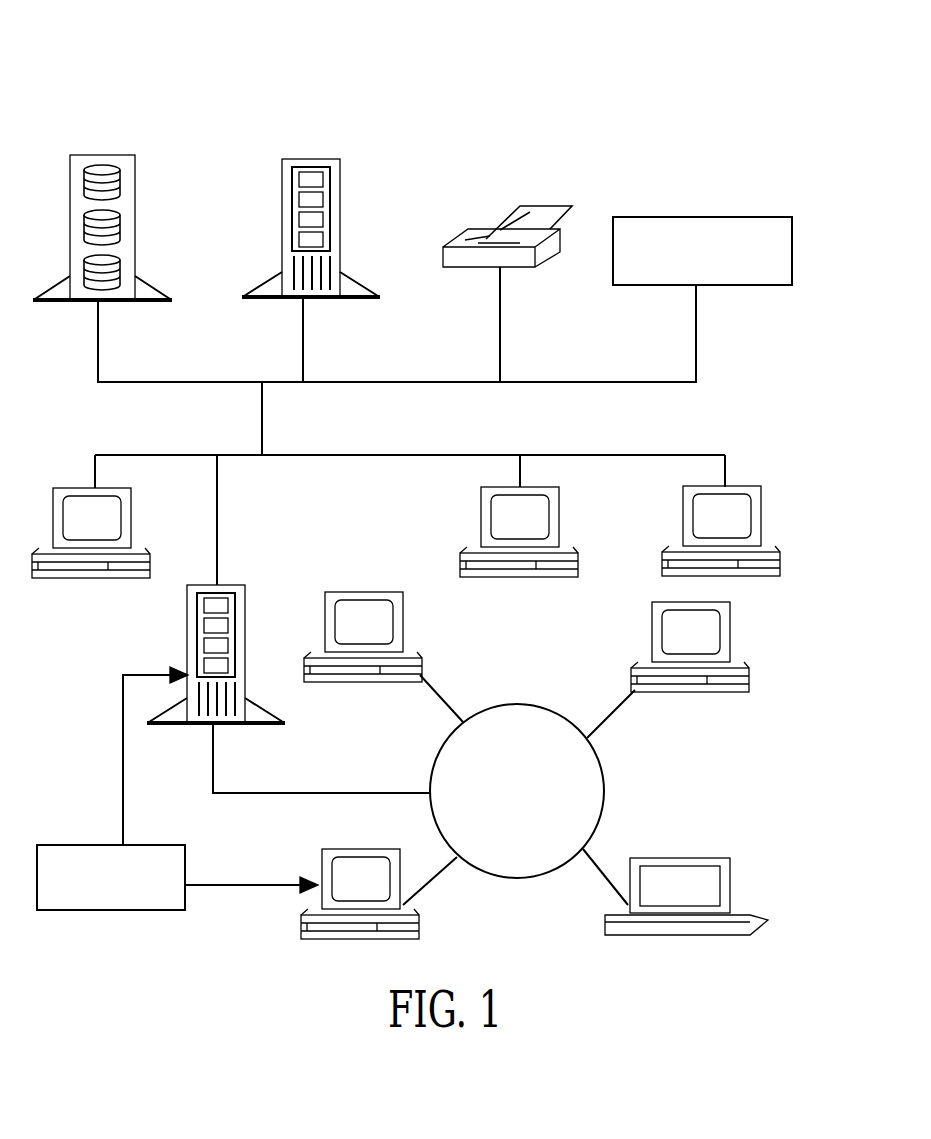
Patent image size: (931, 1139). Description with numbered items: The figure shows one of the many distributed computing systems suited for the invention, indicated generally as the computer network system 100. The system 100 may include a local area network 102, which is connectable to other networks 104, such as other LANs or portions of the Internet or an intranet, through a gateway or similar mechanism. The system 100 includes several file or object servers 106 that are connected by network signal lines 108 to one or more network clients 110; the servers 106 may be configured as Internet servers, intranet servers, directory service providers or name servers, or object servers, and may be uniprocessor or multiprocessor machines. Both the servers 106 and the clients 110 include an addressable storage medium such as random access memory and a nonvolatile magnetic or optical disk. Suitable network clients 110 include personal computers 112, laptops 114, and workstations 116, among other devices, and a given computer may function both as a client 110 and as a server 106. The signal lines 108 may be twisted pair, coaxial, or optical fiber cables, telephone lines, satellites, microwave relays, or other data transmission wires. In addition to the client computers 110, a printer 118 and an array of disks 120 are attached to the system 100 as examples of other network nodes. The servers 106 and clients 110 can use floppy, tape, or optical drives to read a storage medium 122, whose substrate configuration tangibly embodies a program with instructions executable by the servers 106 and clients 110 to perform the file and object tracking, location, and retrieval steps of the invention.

The computer network system 100 is at (255, 56).
The local area network 102 is at (652, 455).
The other networks 104 is at (685, 217).
The file or object server 106 is at (308, 158).
The network signal line 108 is at (217, 515).
The network client 110 is at (668, 690).
The personal computer 112 is at (408, 628).
The laptop 114 is at (658, 858).
The workstation 116 is at (743, 487).
The printer 118 is at (523, 203).
The array of disks 120 is at (100, 155).
The storage medium 122 is at (188, 865).